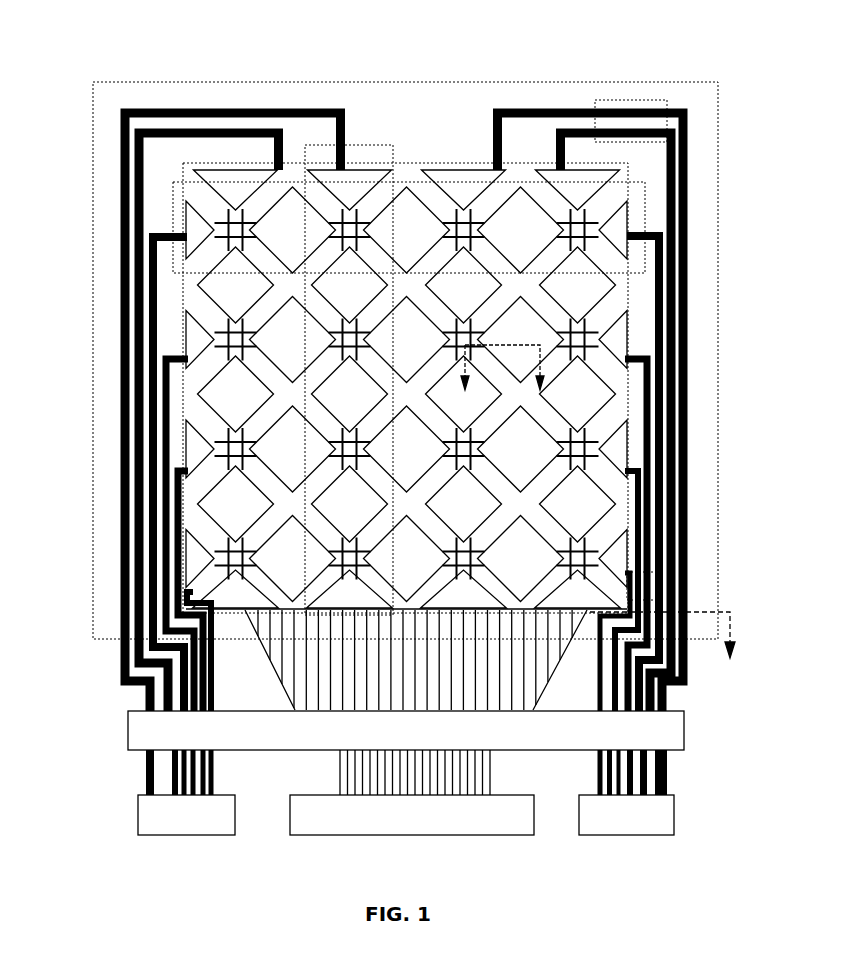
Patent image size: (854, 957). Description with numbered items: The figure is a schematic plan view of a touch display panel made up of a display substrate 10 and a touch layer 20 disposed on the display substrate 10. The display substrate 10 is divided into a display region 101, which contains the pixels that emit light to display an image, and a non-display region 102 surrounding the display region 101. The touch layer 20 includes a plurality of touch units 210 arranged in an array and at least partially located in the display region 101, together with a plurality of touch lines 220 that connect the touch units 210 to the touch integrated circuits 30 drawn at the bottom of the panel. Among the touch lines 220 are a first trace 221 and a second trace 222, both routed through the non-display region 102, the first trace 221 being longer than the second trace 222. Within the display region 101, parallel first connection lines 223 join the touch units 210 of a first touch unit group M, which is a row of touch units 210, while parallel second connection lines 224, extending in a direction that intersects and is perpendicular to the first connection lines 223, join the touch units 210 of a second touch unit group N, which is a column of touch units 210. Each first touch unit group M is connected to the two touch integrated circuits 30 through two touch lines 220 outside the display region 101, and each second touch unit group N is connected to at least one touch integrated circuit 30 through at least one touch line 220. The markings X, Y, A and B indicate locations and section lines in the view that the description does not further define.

The display substrate 10 is at (405, 319).
The display region 101 is at (404, 160).
The non-display region 102 is at (471, 104).
The touch layer 20 is at (397, 364).
The touch unit 210 is at (190, 336).
The touch line 220 is at (404, 364).
The first trace 221 is at (606, 108).
The second trace 222 is at (643, 108).
The first connection line 223 is at (232, 216).
The second connection line 224 is at (244, 216).
The touch integrated circuit 30 is at (138, 820).
The first touch unit group M is at (172, 210).
The second touch unit group N is at (361, 148).
The region X is at (652, 590).
The region Y is at (658, 100).
The section line A is at (671, 635).
The section line B is at (510, 367).